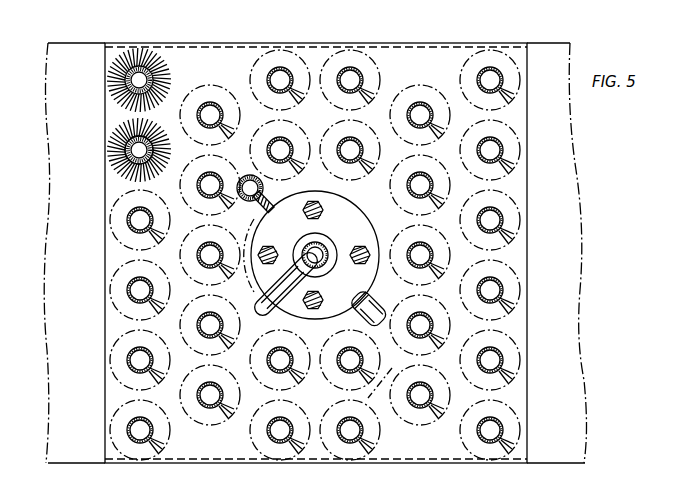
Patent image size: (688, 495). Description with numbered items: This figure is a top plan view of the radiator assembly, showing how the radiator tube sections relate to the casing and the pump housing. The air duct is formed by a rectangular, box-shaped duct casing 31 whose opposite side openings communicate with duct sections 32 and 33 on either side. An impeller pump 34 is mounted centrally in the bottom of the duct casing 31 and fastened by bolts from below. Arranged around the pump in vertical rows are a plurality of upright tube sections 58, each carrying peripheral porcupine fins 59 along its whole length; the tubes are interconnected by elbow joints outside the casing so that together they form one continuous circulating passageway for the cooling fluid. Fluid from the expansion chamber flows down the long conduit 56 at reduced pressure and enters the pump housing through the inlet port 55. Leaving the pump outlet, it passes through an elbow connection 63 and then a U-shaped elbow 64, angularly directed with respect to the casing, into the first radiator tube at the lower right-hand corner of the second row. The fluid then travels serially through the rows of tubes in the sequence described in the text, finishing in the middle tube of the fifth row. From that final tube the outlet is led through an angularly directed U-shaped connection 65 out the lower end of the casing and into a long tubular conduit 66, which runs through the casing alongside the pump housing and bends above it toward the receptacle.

The duct casing 31 is at (407, 50).
The duct section 32 is at (45, 362).
The duct section 33 is at (585, 367).
The impeller pump 34 is at (356, 218).
The inlet port 55 is at (270, 204).
The long conduit 56 is at (247, 176).
The upright tube section 58 is at (120, 168).
The porcupine fin 59 is at (124, 151).
The elbow connection 63 is at (372, 311).
The U-shaped elbow 64 is at (390, 370).
The U-shaped connection 65 is at (250, 222).
The long tubular conduit 66 is at (297, 310).